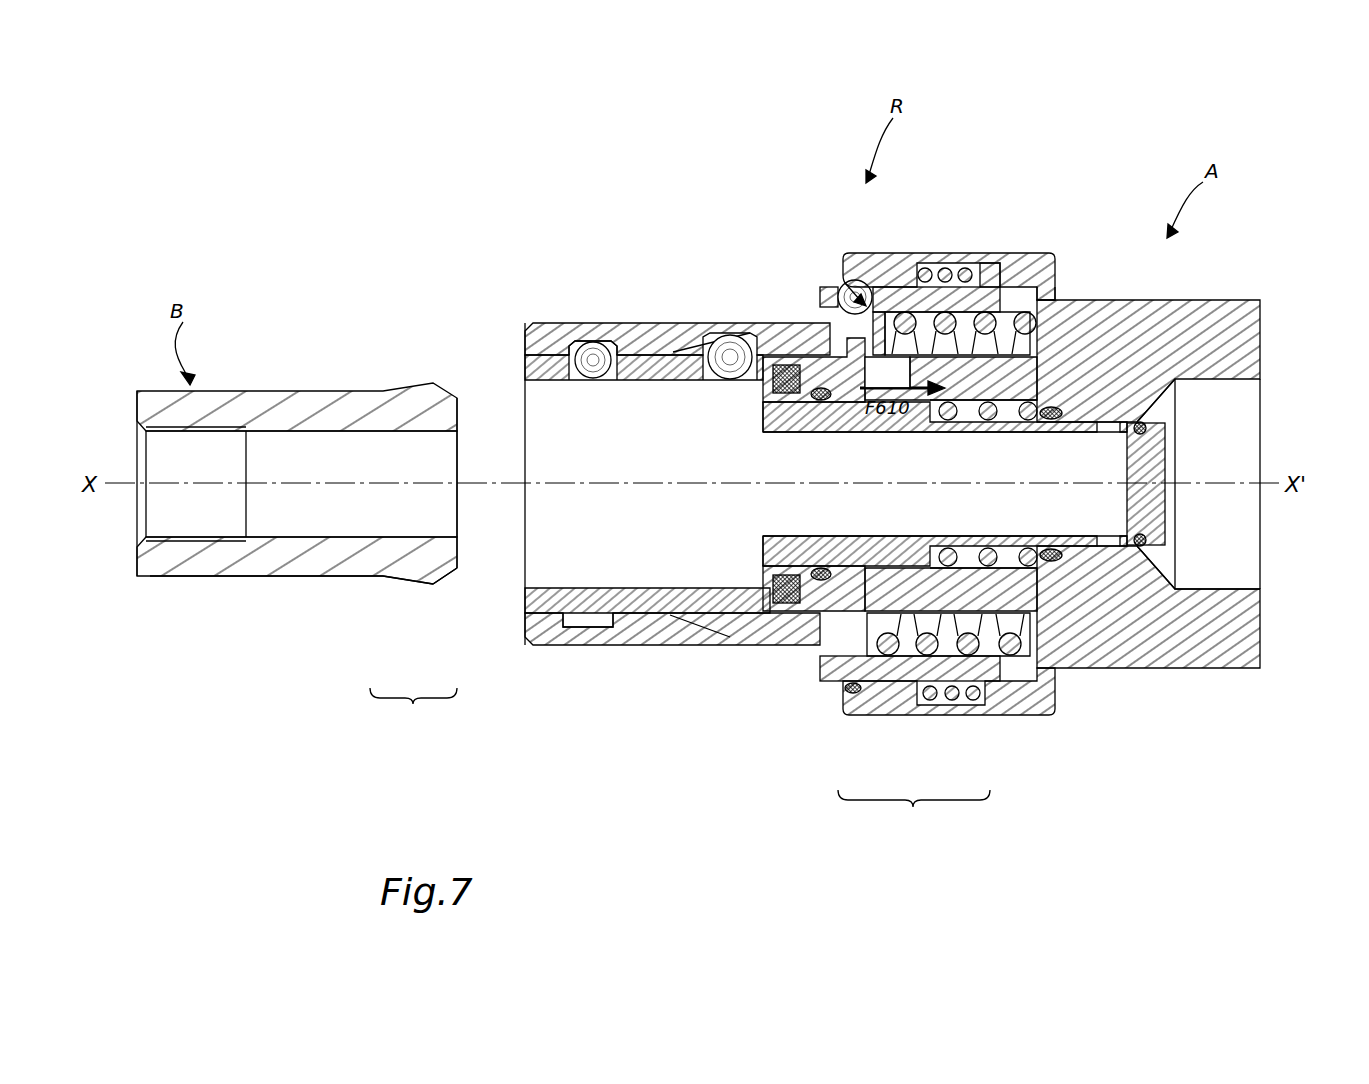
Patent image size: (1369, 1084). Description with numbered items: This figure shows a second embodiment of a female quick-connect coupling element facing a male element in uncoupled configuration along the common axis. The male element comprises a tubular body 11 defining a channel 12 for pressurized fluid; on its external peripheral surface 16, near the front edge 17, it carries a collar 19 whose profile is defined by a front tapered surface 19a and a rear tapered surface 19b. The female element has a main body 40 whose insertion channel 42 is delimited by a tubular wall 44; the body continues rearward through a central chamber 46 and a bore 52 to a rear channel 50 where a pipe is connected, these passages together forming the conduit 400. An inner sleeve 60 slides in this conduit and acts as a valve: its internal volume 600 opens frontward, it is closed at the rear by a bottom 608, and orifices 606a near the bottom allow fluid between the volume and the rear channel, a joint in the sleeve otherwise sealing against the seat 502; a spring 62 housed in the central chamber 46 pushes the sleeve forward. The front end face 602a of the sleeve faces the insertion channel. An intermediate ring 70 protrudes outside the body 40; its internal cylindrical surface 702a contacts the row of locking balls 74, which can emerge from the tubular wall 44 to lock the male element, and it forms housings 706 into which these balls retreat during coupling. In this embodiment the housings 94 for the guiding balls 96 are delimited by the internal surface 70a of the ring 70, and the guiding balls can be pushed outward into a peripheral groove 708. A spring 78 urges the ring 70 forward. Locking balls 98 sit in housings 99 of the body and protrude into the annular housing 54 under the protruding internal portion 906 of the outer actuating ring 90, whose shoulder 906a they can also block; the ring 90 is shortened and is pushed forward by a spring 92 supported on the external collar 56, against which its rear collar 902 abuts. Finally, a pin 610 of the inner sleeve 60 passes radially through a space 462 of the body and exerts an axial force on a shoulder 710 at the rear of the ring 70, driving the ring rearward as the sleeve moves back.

The tubular body 11 is at (300, 403).
The channel 12 is at (275, 510).
The external peripheral surface 16 is at (302, 580).
The front edge 17 is at (460, 556).
The collar 19 is at (413, 708).
The front tapered surface 19a is at (448, 588).
The rear tapered surface 19b is at (405, 588).
The main body 40 is at (1140, 655).
The insertion channel 42 is at (690, 660).
The tubular wall 44 is at (640, 368).
The central chamber 46 is at (880, 640).
The rear channel 50 is at (1200, 549).
The bore 52 is at (1030, 548).
The annular housing 54 is at (1002, 345).
The external collar 56 is at (993, 278).
The inner sleeve 60 is at (782, 420).
The spring 62 is at (955, 552).
The intermediate ring 70 is at (690, 648).
The internal surface 70a is at (543, 368).
The locking balls 74 is at (730, 350).
The spring 78 is at (905, 330).
The outer actuating ring 90 is at (882, 300).
The spring 92 is at (926, 268).
The housings 94 is at (605, 372).
The guiding balls 96 is at (598, 350).
The locking balls 98 is at (845, 283).
The housings 99 is at (848, 282).
The conduit 400 is at (914, 816).
The space 462 is at (964, 330).
The seat 502 is at (1163, 403).
The internal volume 600 is at (945, 484).
The end face of valve 602a is at (760, 555).
The orifices 606a is at (1118, 540).
The bottom 608 is at (1148, 517).
The pin 610 is at (862, 372).
The internal cylindrical surface 702a is at (700, 360).
The housings 706 is at (778, 603).
The peripheral groove 708 is at (592, 628).
The shoulder 710 is at (827, 288).
The rear collar 902 is at (1048, 276).
The protruding internal portion 906 is at (866, 655).
The shoulder 906a is at (844, 689).